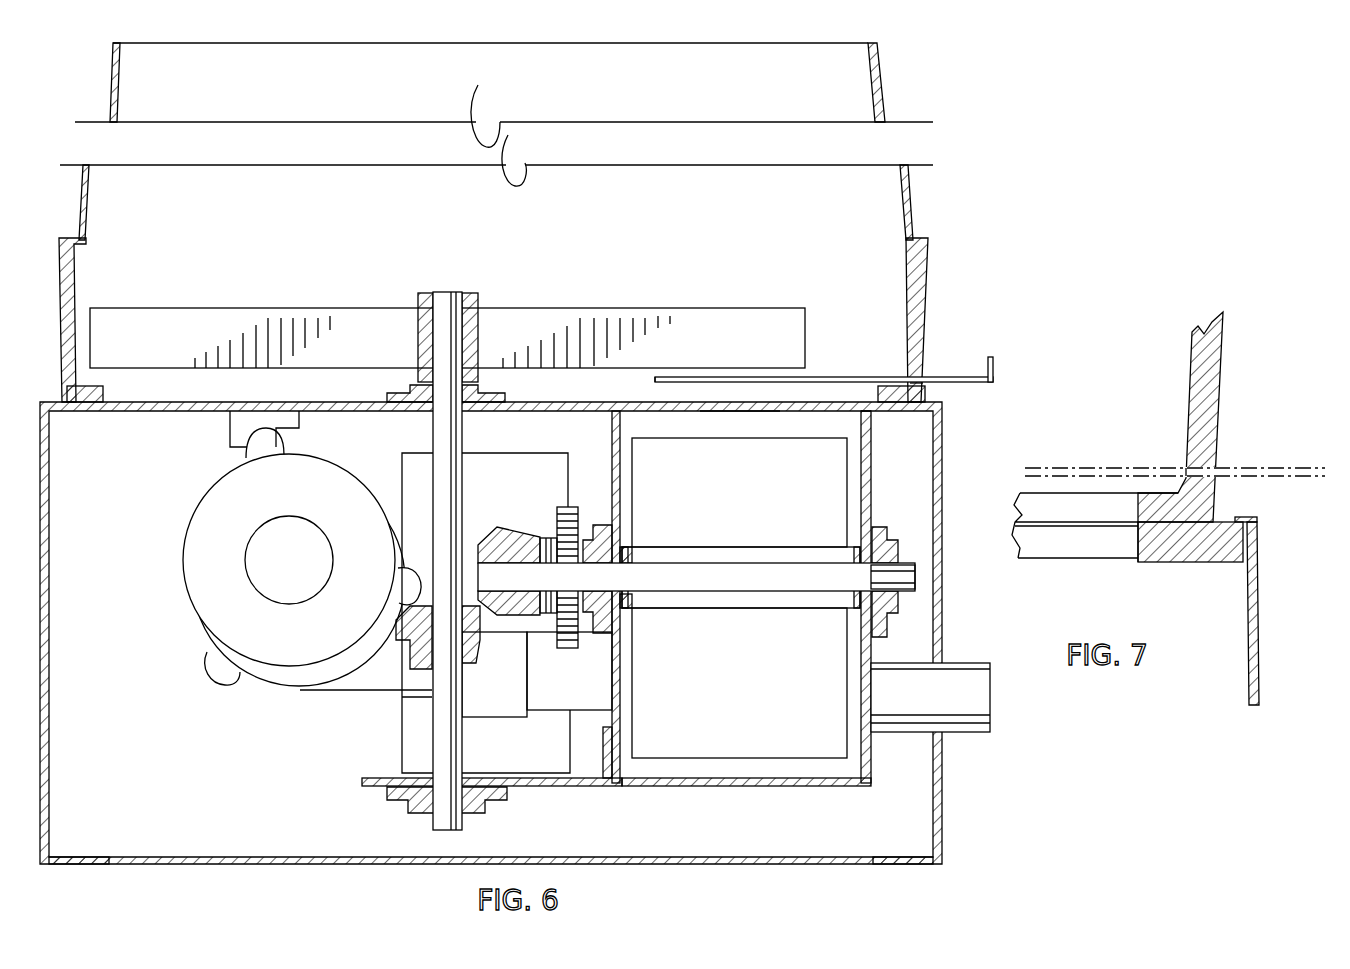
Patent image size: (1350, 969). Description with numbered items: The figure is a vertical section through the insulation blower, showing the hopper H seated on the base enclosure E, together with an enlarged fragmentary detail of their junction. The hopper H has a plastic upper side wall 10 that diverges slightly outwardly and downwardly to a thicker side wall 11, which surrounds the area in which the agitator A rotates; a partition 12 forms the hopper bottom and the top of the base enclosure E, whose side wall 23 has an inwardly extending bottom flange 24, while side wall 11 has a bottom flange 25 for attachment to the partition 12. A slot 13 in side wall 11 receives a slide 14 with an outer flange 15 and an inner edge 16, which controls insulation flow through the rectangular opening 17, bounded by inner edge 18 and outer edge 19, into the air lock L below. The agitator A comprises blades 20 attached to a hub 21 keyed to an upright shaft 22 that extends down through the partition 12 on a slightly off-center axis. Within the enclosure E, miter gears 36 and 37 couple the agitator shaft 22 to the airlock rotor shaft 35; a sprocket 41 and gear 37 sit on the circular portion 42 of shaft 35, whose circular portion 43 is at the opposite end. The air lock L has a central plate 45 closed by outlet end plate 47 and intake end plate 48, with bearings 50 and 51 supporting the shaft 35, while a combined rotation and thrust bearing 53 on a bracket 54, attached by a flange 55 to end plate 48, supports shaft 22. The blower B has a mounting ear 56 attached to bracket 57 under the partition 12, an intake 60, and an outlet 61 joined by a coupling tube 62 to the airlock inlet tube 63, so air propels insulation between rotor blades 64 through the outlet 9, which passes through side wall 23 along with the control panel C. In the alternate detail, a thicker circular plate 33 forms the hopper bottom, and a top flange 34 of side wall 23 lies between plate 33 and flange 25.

In FIG. 6, the outlet 9 is at (988, 732).
In FIG. 6, the upper side wall 10 is at (112, 86).
In FIG. 6, the side wall 11 is at (73, 276).
In FIG. 7, the side wall 11 is at (1225, 412).
In FIG. 6, the partition 12 is at (388, 398).
In FIG. 6, the slot 13 is at (912, 373).
In FIG. 7, the slot 13 is at (1190, 465).
In FIG. 6, the slide 14 is at (815, 377).
In FIG. 7, the slide 14 is at (1266, 470).
In FIG. 6, the outer flange 15 is at (993, 362).
In FIG. 6, the inner edge 16 is at (655, 379).
In FIG. 6, the rectangular opening 17 is at (720, 411).
In FIG. 7, the rectangular opening 17 is at (1058, 548).
In FIG. 6, the inner edge 18 is at (620, 412).
In FIG. 6, the outer edge 19 is at (862, 411).
In FIG. 7, the outer edge 19 is at (1132, 562).
In FIG. 6, the blades 20 is at (302, 308).
In FIG. 6, the hub 21 is at (418, 296).
In FIG. 6, the upright shaft 22 is at (446, 292).
In FIG. 6, the side wall 23 is at (48, 480).
In FIG. 7, the side wall 23 is at (1259, 575).
In FIG. 6, the bottom flange 24 is at (72, 858).
In FIG. 6, the bottom flange 25 is at (105, 394).
In FIG. 7, the bottom flange 25 is at (1138, 502).
In FIG. 7, the circular plate 33 is at (1210, 562).
In FIG. 7, the top flange 34 is at (1252, 517).
In FIG. 6, the airlock rotor shaft 35 is at (708, 608).
In FIG. 6, the miter gear 36 is at (410, 656).
In FIG. 6, the miter gear 37 is at (530, 538).
In FIG. 6, the sprocket 41 is at (562, 507).
In FIG. 6, the circular portion 42 is at (610, 577).
In FIG. 6, the circular portion 43 is at (918, 576).
In FIG. 6, the central plate 45 is at (700, 787).
In FIG. 6, the outlet end plate 47 is at (861, 652).
In FIG. 6, the intake end plate 48 is at (621, 492).
In FIG. 6, the bearing 50 is at (600, 525).
In FIG. 6, the bearing 51 is at (887, 536).
In FIG. 6, the combined rotation and thrust bearing 53 is at (400, 812).
In FIG. 6, the bracket 54 is at (560, 787).
In FIG. 6, the flange 55 is at (603, 750).
In FIG. 6, the mounting ear 56 is at (250, 452).
In FIG. 6, the bracket 57 is at (232, 428).
In FIG. 6, the intake 60 is at (312, 530).
In FIG. 6, the outlet 61 is at (362, 691).
In FIG. 6, the coupling tube 62 is at (492, 710).
In FIG. 6, the inlet tube 63 is at (600, 685).
In FIG. 6, the blades 64 is at (739, 598).
In FIG. 6, the agitator A is at (470, 286).
In FIG. 6, the blower B is at (188, 515).
In FIG. 6, the control panel C is at (478, 452).
In FIG. 6, the hopper H is at (940, 237).
In FIG. 6, the air lock L is at (808, 790).
In FIG. 6, the base enclosure E is at (942, 808).